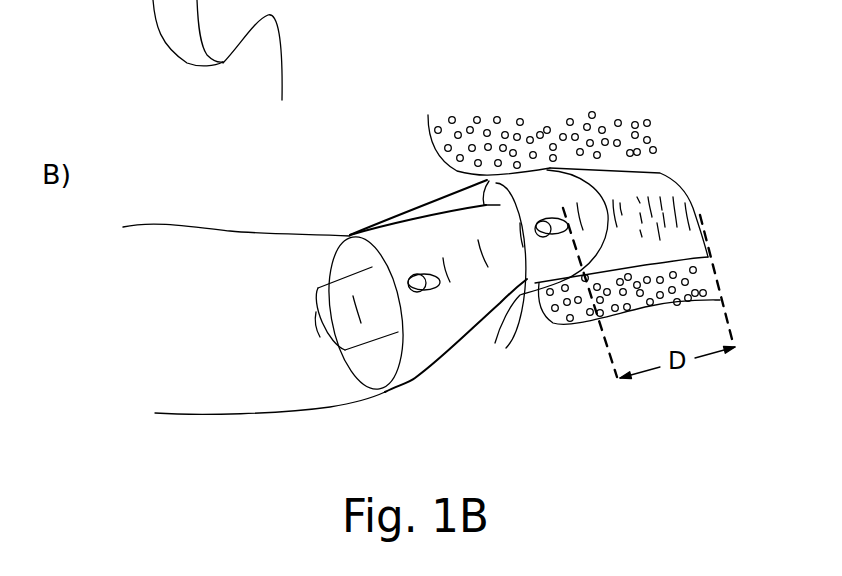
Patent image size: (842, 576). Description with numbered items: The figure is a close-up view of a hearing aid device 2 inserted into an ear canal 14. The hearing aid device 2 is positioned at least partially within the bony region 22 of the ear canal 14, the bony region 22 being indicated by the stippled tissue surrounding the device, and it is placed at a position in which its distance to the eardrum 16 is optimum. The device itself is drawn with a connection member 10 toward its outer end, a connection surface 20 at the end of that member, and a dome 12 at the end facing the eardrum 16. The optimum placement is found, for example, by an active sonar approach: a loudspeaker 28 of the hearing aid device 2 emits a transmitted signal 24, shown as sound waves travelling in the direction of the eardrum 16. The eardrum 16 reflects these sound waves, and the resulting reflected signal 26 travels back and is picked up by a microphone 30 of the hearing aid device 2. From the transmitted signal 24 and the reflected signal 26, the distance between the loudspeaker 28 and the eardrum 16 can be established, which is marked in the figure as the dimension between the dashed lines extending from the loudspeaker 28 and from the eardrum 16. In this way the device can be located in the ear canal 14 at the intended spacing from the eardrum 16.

The hearing aid device 2 is at (379, 205).
The connection member 10 is at (337, 282).
The dome 12 is at (547, 195).
The ear canal 14 is at (193, 255).
The eardrum 16 is at (688, 207).
The connection surface 20 is at (317, 301).
The bony region 22 is at (578, 100).
The transmitted signal 24 is at (655, 194).
The reflected signal 26 is at (450, 283).
The loudspeaker 28 is at (548, 222).
The microphone 30 is at (423, 289).